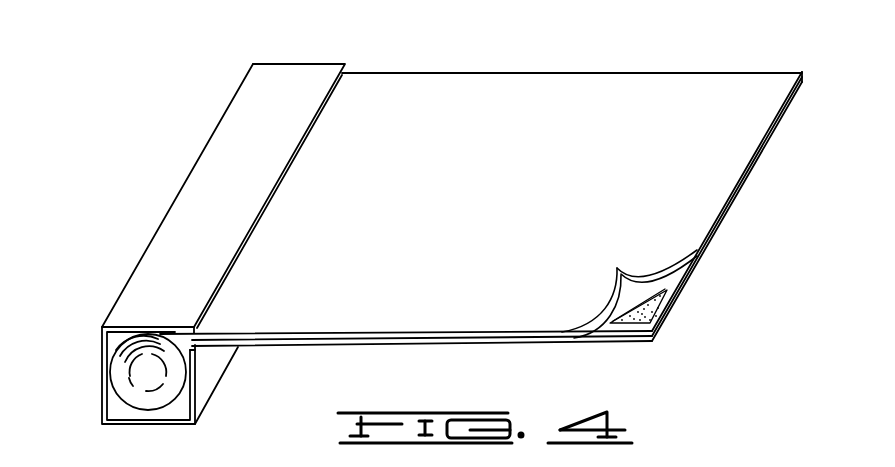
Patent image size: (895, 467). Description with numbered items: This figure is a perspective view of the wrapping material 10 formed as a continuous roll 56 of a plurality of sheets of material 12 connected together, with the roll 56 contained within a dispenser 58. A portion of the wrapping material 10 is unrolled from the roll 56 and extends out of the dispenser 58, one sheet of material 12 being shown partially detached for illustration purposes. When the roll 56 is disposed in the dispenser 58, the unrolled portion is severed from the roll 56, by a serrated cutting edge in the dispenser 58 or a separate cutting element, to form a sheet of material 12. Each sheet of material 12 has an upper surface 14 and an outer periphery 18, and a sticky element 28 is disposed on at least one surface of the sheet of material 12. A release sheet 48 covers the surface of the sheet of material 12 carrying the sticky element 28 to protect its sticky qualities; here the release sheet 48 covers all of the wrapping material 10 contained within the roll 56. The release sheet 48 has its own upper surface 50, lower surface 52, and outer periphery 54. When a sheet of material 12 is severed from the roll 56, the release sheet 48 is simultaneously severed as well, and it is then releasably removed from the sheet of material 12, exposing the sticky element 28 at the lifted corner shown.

The wrapping material 10 is at (552, 64).
The sheet of material 12 is at (676, 305).
The upper surface 14 is at (674, 292).
The outer periphery 18 is at (662, 328).
The sticky element 28 is at (632, 322).
The release sheet 48 is at (598, 86).
The upper surface 50 is at (695, 85).
The lower surface 52 is at (635, 290).
The outer periphery 54 is at (753, 163).
The roll 56 is at (142, 372).
The dispenser 58 is at (283, 82).